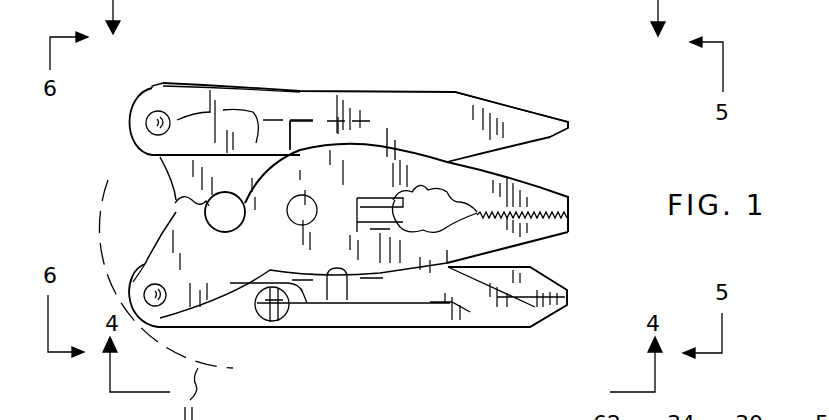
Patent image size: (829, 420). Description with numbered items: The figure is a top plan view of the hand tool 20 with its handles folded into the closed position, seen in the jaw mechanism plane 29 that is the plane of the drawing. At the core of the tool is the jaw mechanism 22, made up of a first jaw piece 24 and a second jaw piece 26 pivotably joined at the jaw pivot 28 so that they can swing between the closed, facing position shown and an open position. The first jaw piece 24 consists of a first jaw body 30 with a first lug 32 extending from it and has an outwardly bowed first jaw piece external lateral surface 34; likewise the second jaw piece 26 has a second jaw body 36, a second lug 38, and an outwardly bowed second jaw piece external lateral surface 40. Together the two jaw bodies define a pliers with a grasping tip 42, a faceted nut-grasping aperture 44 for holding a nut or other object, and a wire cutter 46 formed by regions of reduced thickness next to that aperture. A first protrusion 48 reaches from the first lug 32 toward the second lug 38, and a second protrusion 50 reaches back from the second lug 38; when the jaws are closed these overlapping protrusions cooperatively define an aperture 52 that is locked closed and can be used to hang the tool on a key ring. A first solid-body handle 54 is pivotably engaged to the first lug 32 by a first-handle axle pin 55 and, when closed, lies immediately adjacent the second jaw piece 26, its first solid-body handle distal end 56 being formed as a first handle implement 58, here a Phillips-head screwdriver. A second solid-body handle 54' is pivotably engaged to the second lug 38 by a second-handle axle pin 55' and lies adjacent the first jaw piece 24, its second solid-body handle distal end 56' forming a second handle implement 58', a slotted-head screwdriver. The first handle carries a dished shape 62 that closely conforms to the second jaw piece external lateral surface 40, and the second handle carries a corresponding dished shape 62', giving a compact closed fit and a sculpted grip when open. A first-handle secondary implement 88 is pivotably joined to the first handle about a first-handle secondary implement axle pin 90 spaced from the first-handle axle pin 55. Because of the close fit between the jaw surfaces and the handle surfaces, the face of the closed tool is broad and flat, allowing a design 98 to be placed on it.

The hand tool 20 is at (115, 136).
The jaw mechanism 22 is at (539, 239).
The first jaw piece 24 is at (518, 192).
The second jaw piece 26 is at (432, 248).
The jaw pivot 28 is at (296, 221).
The jaw mechanism plane 29 is at (51, 209).
The first jaw body 30 is at (420, 165).
The first lug 32 is at (146, 268).
The first jaw piece external lateral surface 34 is at (400, 152).
The second jaw body 36 is at (447, 263).
The second lug 38 is at (160, 166).
The second jaw piece external lateral surface 40 is at (368, 265).
The grasping tip 42 is at (570, 201).
The faceted nut-grasping aperture 44 is at (417, 180).
The wire cutter 46 is at (343, 276).
The first protrusion 48 is at (176, 214).
The second protrusion 50 is at (175, 202).
The aperture 52 is at (224, 194).
The first solid-body handle 54 is at (230, 346).
The second solid-body handle 54' is at (231, 76).
The first-handle axle pin 55 is at (128, 290).
The second-handle axle pin 55' is at (160, 94).
The first solid-body handle distal end 56 is at (557, 334).
The second solid-body handle distal end 56' is at (511, 99).
The first handle implement 58 is at (591, 300).
The second handle implement 58' is at (602, 128).
The dished shape 62 is at (298, 324).
The dished shape 62' is at (308, 120).
The first-handle secondary implement 88 is at (297, 328).
The first-handle secondary implement axle pin 90 is at (274, 327).
The design 98 is at (388, 126).